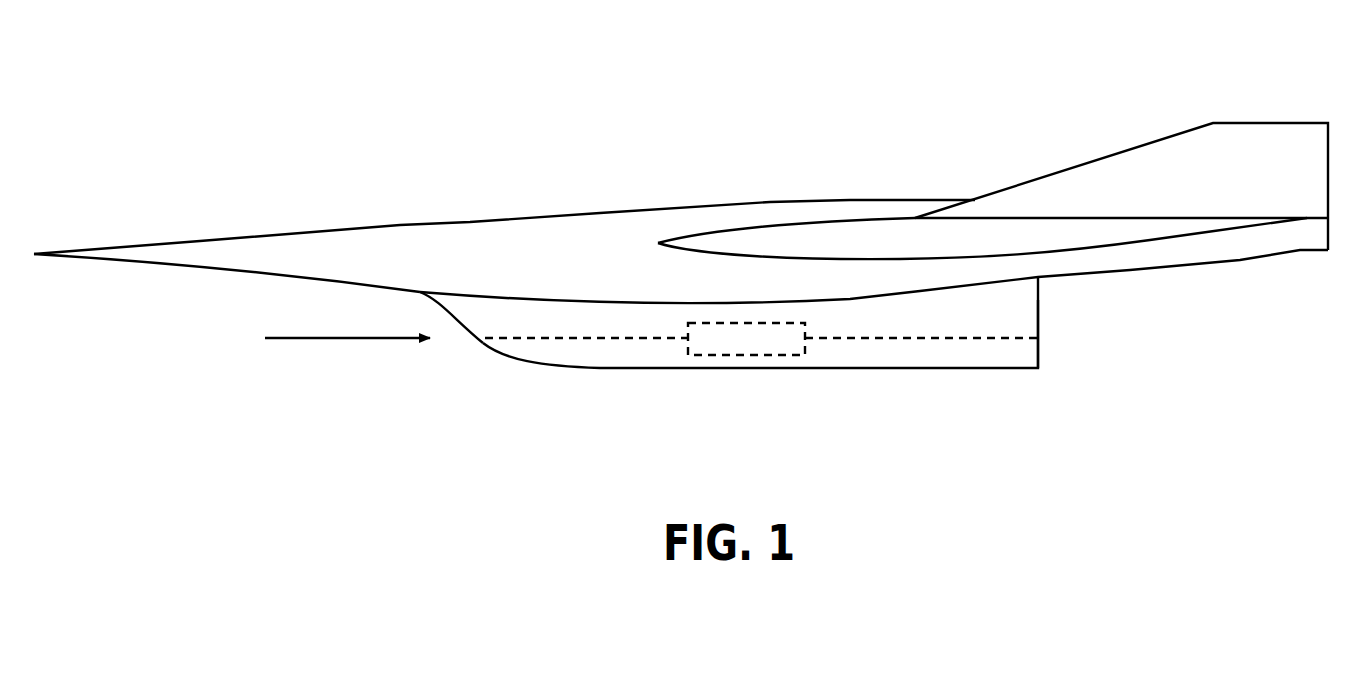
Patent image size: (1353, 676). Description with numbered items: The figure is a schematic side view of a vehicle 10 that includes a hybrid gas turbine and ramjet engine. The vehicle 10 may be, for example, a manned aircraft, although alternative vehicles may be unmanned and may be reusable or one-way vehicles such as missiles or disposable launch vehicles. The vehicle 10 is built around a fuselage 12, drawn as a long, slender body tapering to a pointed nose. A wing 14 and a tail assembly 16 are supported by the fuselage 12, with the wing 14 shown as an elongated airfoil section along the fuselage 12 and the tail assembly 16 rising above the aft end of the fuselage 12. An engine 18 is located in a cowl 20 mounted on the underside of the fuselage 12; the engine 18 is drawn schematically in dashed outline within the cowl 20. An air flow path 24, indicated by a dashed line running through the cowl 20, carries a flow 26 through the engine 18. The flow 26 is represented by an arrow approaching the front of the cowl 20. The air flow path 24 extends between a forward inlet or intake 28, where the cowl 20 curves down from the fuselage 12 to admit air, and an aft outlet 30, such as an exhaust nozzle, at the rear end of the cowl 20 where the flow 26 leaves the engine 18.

The vehicle 10 is at (681, 248).
The fuselage 12 is at (520, 213).
The wing 14 is at (1013, 230).
The tail assembly 16 is at (1265, 137).
The engine 18 is at (742, 356).
The cowl 20 is at (850, 369).
The air flow path 24 is at (577, 342).
The flow 26 is at (348, 340).
The forward inlet/intake 28 is at (455, 348).
The aft outlet 30 is at (1057, 358).